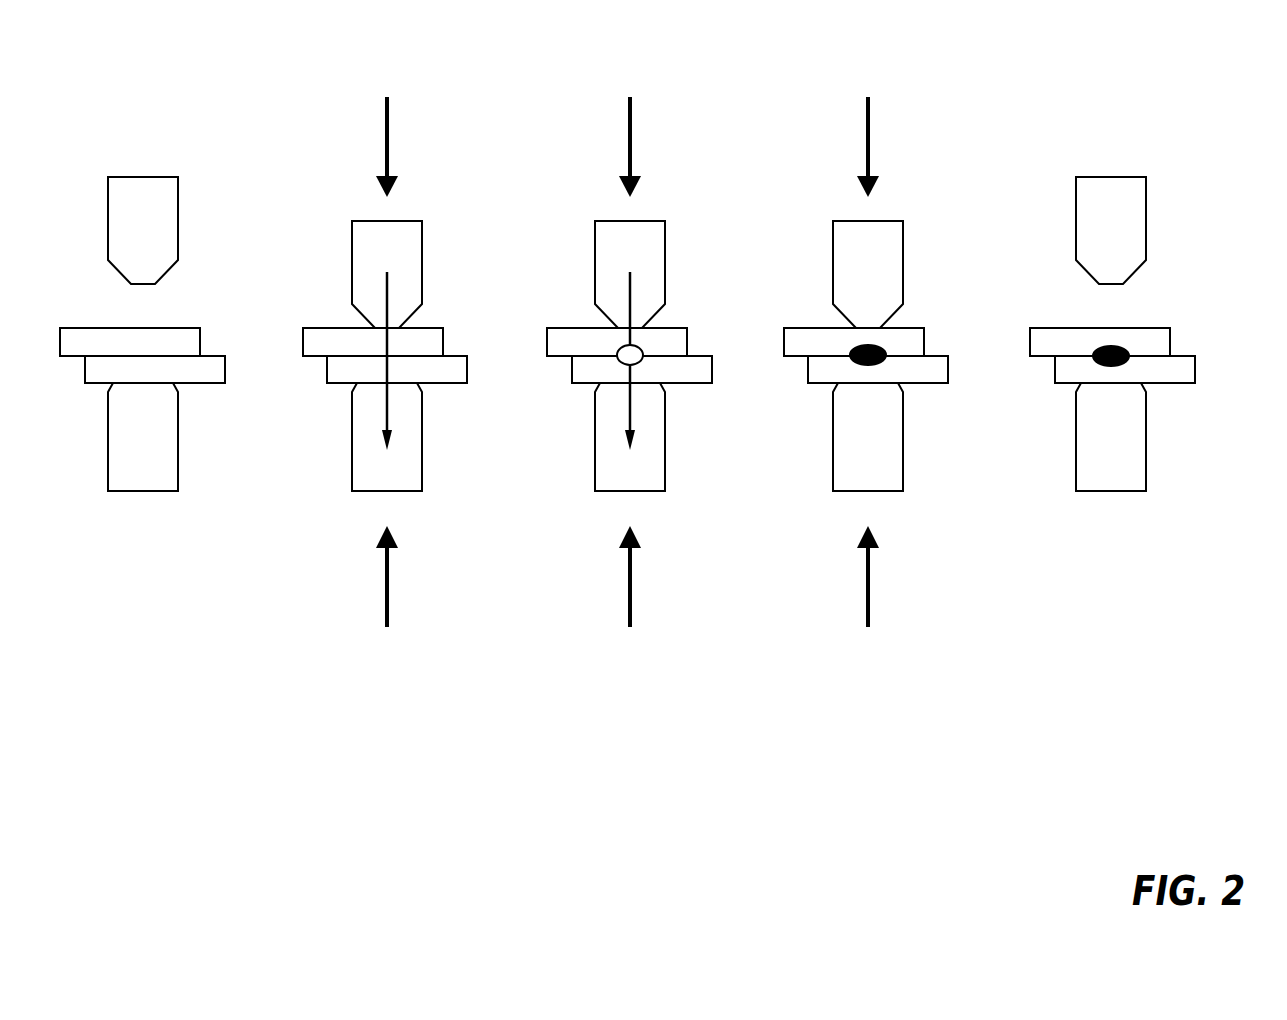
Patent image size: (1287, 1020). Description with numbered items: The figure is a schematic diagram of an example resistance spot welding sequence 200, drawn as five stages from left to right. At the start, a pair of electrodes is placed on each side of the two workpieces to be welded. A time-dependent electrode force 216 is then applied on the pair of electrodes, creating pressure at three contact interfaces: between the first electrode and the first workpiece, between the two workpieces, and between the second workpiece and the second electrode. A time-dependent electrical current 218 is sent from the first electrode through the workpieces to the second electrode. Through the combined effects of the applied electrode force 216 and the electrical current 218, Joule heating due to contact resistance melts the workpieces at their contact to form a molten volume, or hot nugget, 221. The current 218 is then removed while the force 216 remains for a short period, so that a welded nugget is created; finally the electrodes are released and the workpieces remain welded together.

The RSW sequence 200 is at (1225, 64).
The time-dependent electrode force F(t) 216 is at (408, 88).
The time-dependent electrical current I(t) 218 is at (412, 432).
The molten volume (hot nugget) 221 is at (642, 350).